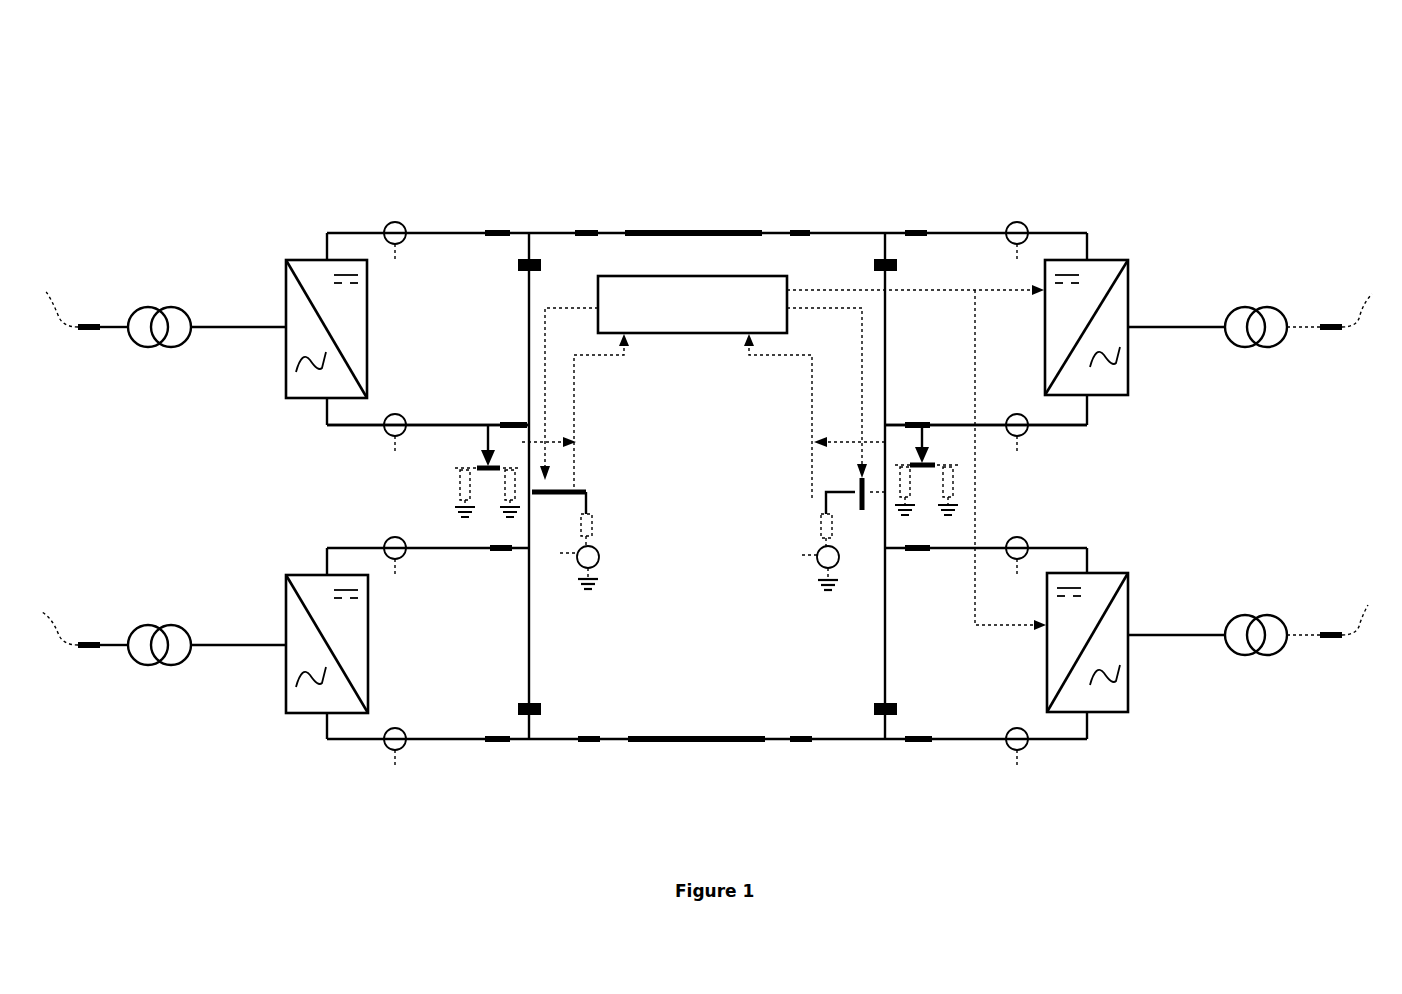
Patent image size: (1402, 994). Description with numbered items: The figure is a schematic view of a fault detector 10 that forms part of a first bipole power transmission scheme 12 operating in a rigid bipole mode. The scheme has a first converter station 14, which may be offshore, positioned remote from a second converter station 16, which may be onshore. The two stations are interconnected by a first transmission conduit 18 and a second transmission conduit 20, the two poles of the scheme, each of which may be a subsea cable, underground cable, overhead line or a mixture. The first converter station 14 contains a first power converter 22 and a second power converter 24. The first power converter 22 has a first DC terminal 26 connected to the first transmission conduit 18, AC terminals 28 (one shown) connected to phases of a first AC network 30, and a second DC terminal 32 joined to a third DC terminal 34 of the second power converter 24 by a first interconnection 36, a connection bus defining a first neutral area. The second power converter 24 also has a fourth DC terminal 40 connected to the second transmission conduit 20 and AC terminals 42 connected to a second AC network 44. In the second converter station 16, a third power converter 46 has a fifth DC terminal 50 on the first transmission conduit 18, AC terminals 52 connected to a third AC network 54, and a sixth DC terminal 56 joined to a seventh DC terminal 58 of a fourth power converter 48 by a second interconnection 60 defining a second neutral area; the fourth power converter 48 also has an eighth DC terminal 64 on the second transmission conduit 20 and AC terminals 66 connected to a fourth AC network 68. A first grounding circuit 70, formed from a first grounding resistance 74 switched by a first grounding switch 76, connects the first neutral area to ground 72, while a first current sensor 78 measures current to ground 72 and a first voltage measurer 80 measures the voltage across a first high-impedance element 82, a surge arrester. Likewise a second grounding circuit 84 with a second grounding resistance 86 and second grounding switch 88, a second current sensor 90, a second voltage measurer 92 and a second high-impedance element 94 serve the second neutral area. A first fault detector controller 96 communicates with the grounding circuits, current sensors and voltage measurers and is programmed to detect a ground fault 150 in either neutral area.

The fault detector 10 is at (650, 264).
The first bipole power transmission scheme 12 is at (236, 136).
The first converter station 14 is at (333, 148).
The second converter station 16 is at (999, 152).
The first transmission conduit 18 is at (702, 232).
The second transmission conduit 20 is at (675, 742).
The first power converter 22 is at (285, 300).
The second power converter 24 is at (285, 612).
The first DC terminal 26 is at (323, 258).
The AC terminals 28 is at (285, 340).
The first AC network 30 is at (109, 305).
The second DC terminal 32 is at (322, 400).
The third DC terminal 34 is at (323, 573).
The first interconnection 36 is at (330, 427).
The fourth DC terminal 40 is at (322, 715).
The AC terminals 42 is at (285, 650).
The second AC network 44 is at (103, 626).
The third power converter 46 is at (1132, 295).
The fourth power converter 48 is at (1132, 610).
The fifth DC terminal 50 is at (1094, 258).
The AC terminals 52 is at (1132, 330).
The third AC network 54 is at (1300, 306).
The sixth DC terminal 56 is at (1100, 398).
The seventh DC terminal 58 is at (1094, 571).
The second interconnection 60 is at (1062, 428).
The eighth DC terminal 64 is at (1098, 714).
The AC terminals 66 is at (1132, 638).
The fourth AC network 68 is at (1300, 621).
The first grounding circuit 70 is at (610, 526).
The ground 72 is at (590, 595).
The first grounding resistance 74 is at (592, 522).
The first grounding switch 76 is at (570, 485).
The first current sensor 78 is at (598, 565).
The first voltage measurer 80 is at (500, 495).
The first high-impedance element 82 is at (462, 483).
The second grounding circuit 84 is at (785, 548).
The second grounding resistance 86 is at (822, 525).
The second grounding switch 88 is at (855, 488).
The second current sensor 90 is at (815, 570).
The second voltage measurer 92 is at (915, 500).
The second high-impedance element 94 is at (958, 486).
The first fault detector controller 96 is at (694, 317).
The ground fault 150 is at (522, 422).